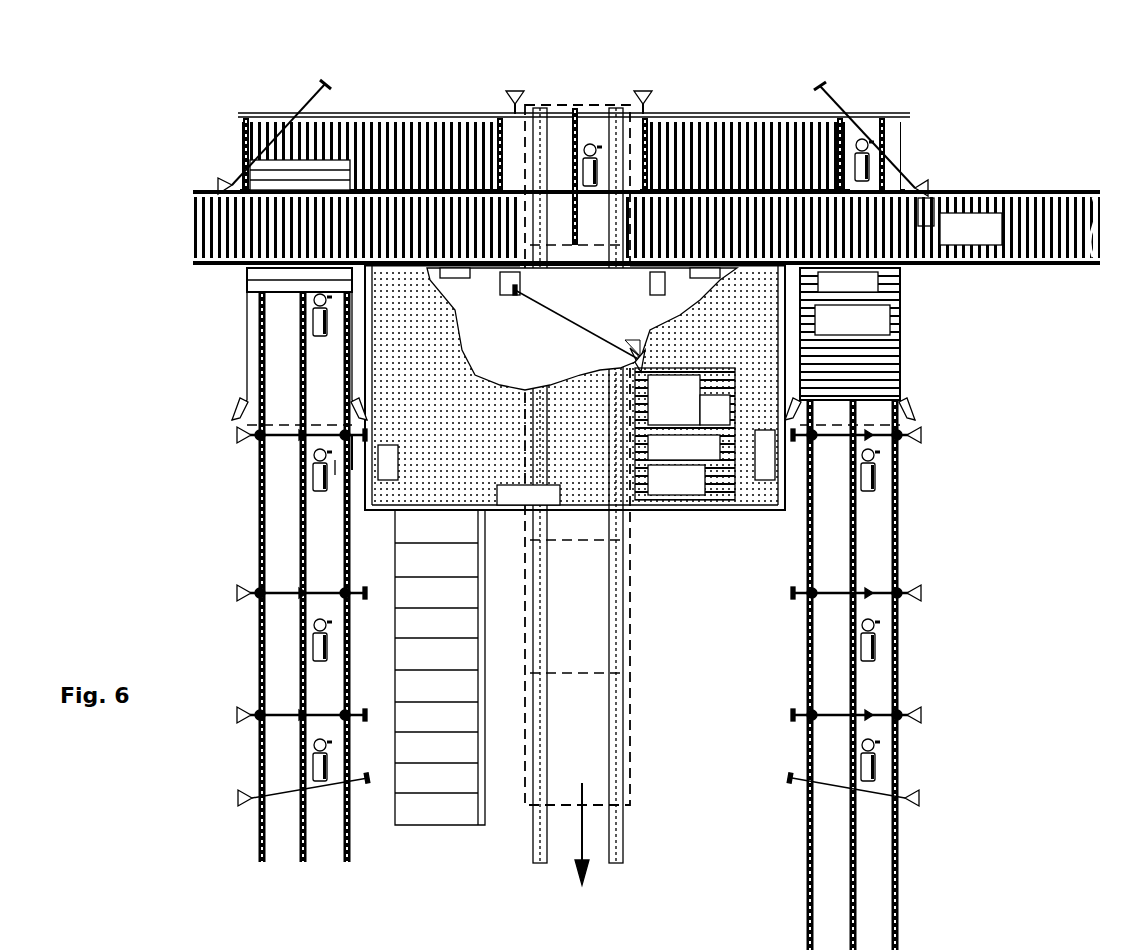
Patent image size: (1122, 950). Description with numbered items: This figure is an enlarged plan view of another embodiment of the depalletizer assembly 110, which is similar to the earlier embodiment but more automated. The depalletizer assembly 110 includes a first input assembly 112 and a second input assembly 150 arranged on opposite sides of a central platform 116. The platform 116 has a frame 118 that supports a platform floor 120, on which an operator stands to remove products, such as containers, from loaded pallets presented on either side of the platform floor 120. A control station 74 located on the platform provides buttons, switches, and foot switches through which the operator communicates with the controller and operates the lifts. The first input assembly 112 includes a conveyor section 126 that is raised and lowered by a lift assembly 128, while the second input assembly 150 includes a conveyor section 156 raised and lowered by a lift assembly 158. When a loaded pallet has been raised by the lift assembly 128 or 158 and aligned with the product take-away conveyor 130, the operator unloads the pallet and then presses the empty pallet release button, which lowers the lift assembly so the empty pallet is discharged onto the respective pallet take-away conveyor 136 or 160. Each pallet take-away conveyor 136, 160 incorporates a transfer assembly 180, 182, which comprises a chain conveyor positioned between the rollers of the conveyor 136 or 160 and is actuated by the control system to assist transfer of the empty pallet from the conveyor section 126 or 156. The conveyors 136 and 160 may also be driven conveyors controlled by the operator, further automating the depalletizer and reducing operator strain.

The depalletizer assembly 110 is at (781, 72).
The first input assembly 112 is at (262, 845).
The platform 116 is at (690, 530).
The frame 118 is at (736, 515).
The platform floor 120 is at (583, 465).
The conveyor section 126 is at (275, 360).
The lift assembly 128 is at (245, 420).
The product take-away conveyor 130 is at (1003, 192).
The pallet take-away conveyor 136 is at (384, 143).
The second input assembly 150 is at (893, 840).
The conveyor section 156 is at (885, 350).
The lift assembly 158 is at (905, 415).
The pallet take-away conveyor 160 is at (728, 140).
The transfer assembly 180 is at (256, 118).
The transfer assembly 182 is at (878, 130).
The control station 74 is at (525, 490).